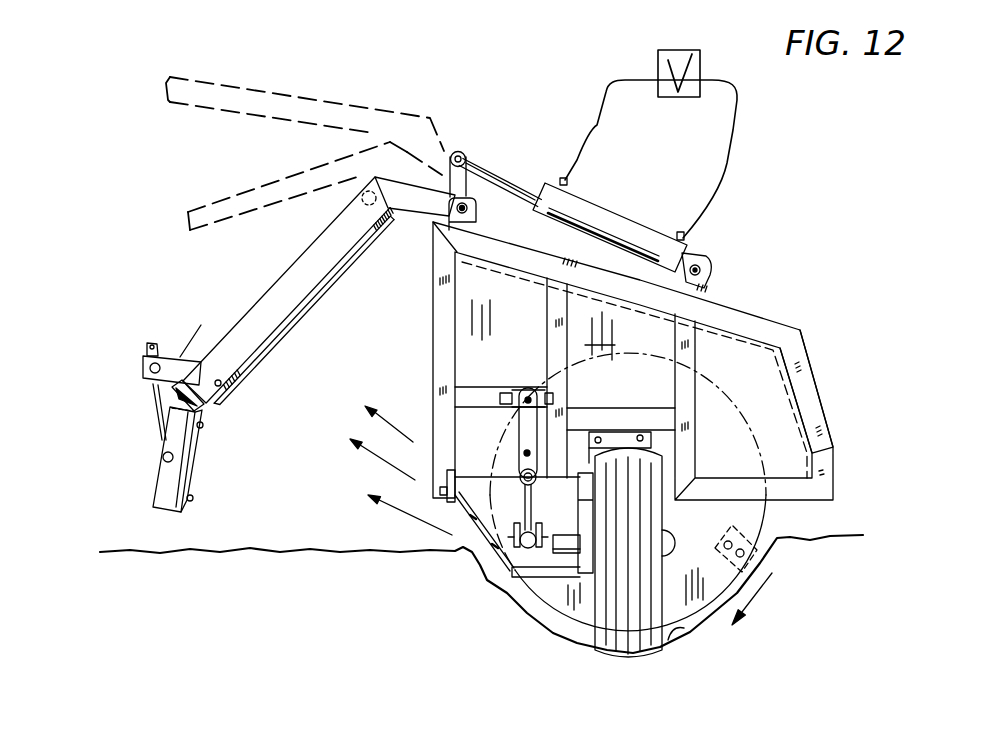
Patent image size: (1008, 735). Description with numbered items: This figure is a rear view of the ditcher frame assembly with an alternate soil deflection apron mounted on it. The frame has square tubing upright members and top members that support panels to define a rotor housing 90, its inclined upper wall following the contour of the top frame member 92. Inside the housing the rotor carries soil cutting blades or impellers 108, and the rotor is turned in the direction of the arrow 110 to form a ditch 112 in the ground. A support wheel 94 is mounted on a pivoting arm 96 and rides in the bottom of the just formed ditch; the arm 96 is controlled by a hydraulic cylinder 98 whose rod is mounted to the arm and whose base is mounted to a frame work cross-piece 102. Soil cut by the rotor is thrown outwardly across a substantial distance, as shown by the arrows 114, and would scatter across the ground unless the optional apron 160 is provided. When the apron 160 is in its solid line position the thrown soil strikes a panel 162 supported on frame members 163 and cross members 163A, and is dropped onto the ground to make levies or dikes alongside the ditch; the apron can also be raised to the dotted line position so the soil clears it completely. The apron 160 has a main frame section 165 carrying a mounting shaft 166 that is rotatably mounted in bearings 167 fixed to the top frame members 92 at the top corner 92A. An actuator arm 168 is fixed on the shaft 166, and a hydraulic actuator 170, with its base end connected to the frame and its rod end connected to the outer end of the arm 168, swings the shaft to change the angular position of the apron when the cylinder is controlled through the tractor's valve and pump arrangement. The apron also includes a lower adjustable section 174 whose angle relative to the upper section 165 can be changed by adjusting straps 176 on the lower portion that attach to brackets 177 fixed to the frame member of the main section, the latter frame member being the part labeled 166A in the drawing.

The rotor housing 90 is at (772, 388).
The top frame member 92 is at (748, 310).
The top corner 92A is at (433, 224).
The support wheel 94 is at (610, 615).
The pivoting arm 96 is at (490, 517).
The hydraulic cylinder 98 is at (520, 430).
The frame work cross-piece 102 is at (475, 385).
The soil cutting blades or impellers 108 is at (772, 555).
The rotor rotation direction arrow 110 is at (768, 586).
The ditch 112 is at (681, 637).
The soil throw arrows 114 is at (403, 510).
The apron 160 is at (265, 280).
The panel 162 is at (323, 289).
The frame members 163 is at (325, 245).
The cross members 163A is at (408, 162).
The main frame section 165 is at (293, 321).
The mounting shaft 166 is at (482, 168).
The rod 166A is at (240, 334).
The bearings 167 is at (480, 228).
The actuator arm 168 is at (462, 152).
The hydraulic actuator 170 is at (608, 200).
The lower adjustable section 174 is at (160, 470).
The straps 176 is at (150, 350).
The brackets 177 is at (201, 325).